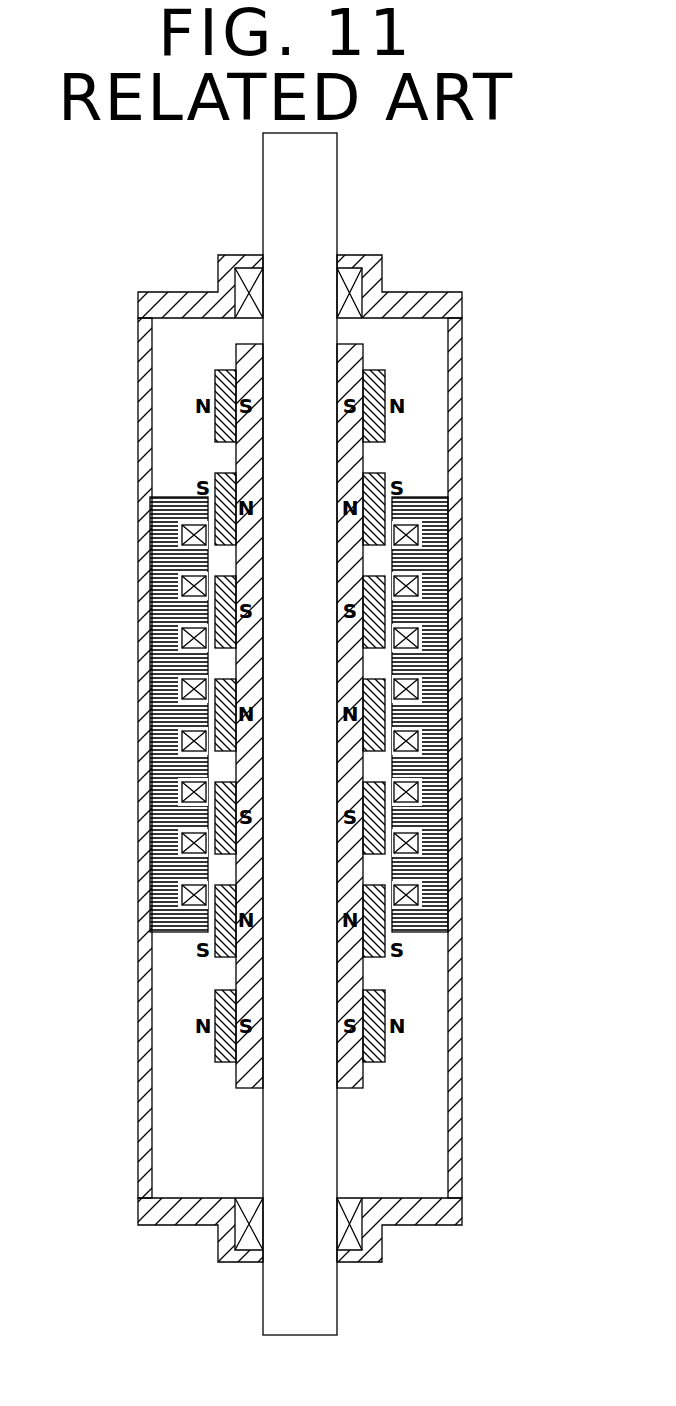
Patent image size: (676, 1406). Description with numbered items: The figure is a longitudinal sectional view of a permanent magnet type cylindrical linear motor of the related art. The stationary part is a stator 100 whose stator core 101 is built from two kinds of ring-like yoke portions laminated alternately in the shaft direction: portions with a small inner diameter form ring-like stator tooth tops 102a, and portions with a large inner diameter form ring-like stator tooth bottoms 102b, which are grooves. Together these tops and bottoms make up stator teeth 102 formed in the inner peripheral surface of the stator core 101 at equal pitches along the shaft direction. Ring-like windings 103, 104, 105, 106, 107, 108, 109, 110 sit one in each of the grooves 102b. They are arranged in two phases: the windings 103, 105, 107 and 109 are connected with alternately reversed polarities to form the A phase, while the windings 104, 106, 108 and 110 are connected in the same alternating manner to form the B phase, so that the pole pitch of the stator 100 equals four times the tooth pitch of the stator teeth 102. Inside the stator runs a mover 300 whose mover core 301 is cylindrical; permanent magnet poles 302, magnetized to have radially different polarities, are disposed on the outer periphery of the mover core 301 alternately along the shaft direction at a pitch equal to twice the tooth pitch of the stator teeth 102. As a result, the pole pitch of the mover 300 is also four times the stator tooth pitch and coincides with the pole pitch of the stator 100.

The stator 100 is at (308, 686).
The stator core 101 is at (434, 710).
The stator teeth 102 is at (486, 513).
The ring-like stator tooth tops 102a is at (452, 558).
The ring-like stator tooth bottoms 102b is at (435, 532).
The ring-like winding 103 is at (165, 535).
The ring-like winding 104 is at (165, 586).
The ring-like winding 105 is at (165, 638).
The ring-like winding 106 is at (165, 689).
The ring-like winding 107 is at (165, 741).
The ring-like winding 108 is at (165, 792).
The ring-like winding 109 is at (165, 843).
The ring-like winding 110 is at (165, 895).
The mover 300 is at (339, 1115).
The mover core 301 is at (352, 973).
The permanent magnet poles 302 is at (383, 383).